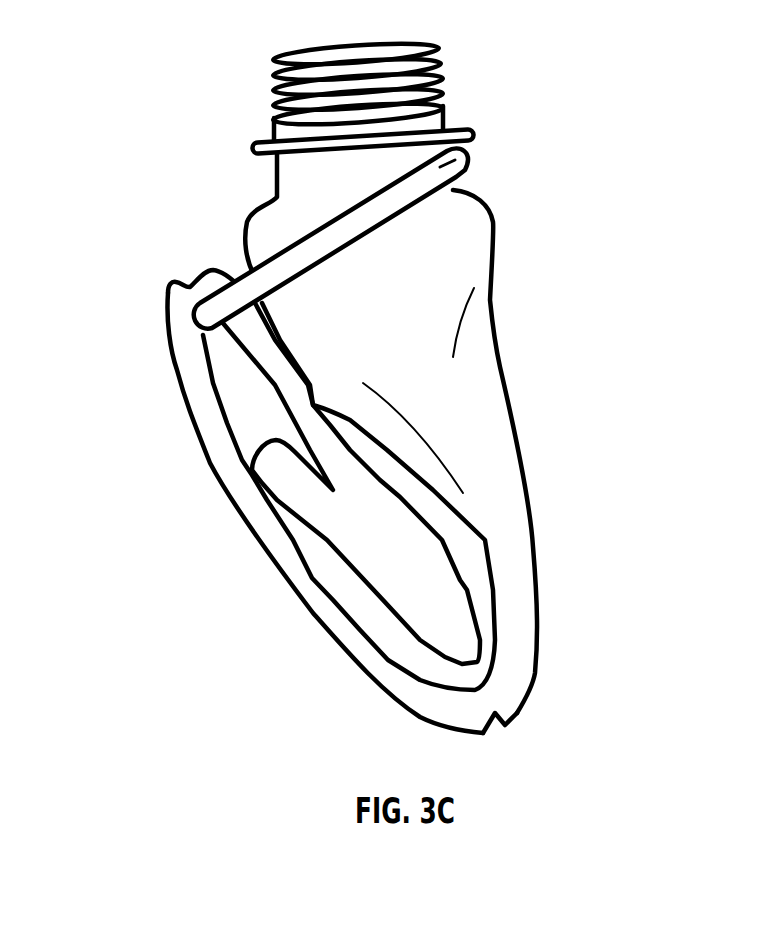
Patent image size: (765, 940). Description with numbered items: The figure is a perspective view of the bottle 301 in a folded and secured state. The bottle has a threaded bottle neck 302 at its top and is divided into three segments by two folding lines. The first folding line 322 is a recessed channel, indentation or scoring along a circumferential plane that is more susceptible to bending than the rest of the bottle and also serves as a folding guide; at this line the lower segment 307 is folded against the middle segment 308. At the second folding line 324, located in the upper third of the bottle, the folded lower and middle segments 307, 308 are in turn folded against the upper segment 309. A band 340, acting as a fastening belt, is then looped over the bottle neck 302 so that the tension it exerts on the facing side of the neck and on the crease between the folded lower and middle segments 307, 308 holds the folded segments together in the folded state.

The bottle 301 is at (187, 93).
The bottle neck 302 is at (287, 190).
The lower segment 307 is at (412, 560).
The middle segment 308 is at (240, 487).
The upper segment 309 is at (507, 530).
The first folding line 322 is at (200, 283).
The second folding line 324 is at (500, 733).
The band 340 is at (468, 150).